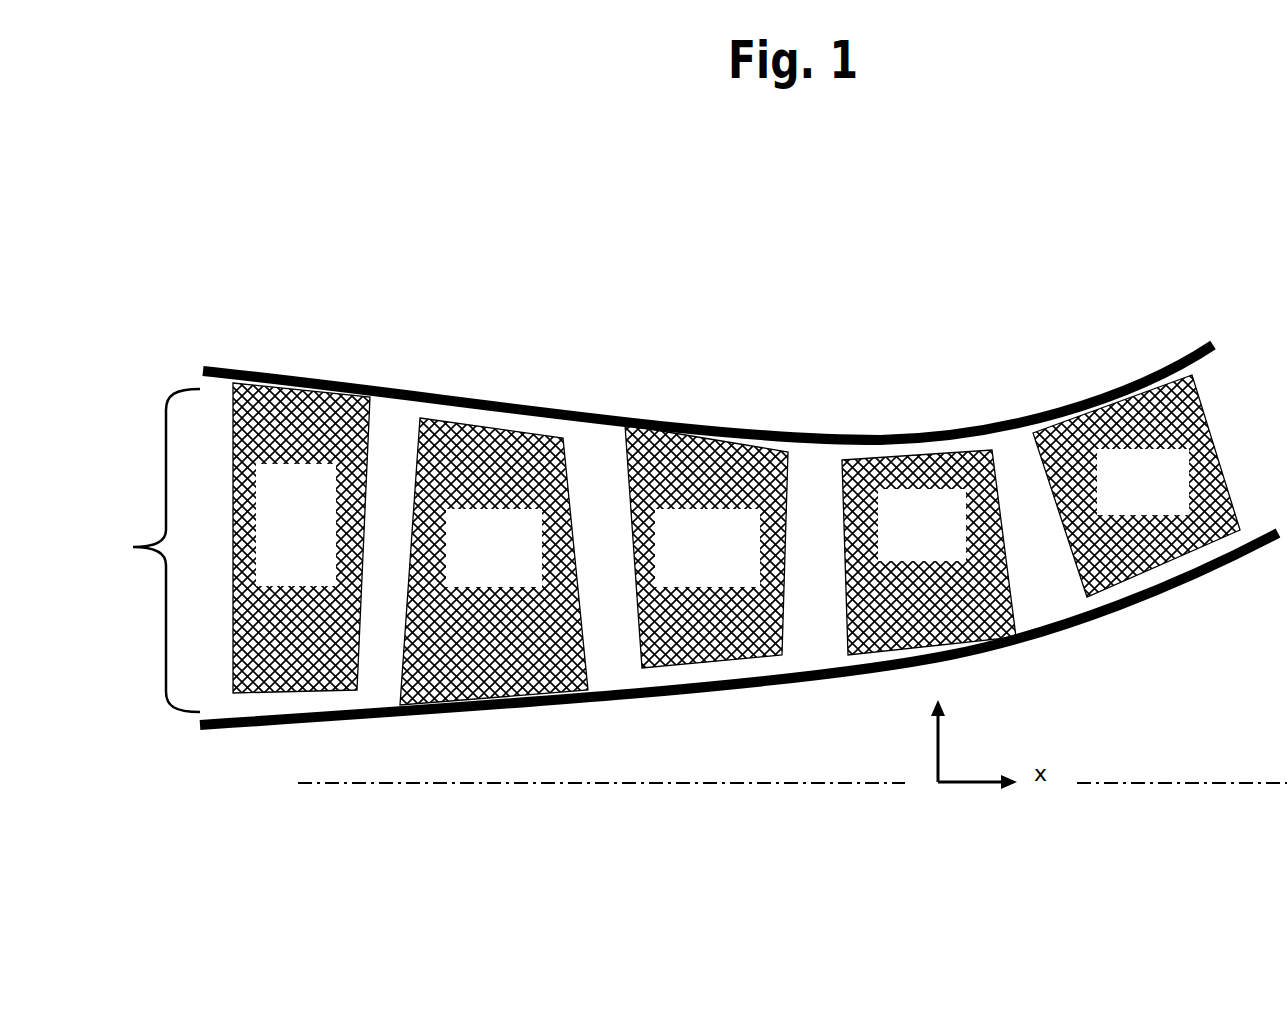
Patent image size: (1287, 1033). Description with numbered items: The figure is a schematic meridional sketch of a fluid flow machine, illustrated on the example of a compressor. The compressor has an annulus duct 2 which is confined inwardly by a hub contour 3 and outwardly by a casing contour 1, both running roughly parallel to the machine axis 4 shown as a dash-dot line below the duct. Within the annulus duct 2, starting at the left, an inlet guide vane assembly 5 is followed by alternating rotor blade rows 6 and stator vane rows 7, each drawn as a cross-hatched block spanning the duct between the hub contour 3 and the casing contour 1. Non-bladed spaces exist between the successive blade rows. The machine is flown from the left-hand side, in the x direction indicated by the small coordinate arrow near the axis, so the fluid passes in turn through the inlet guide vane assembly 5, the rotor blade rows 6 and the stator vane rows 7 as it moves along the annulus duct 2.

The casing contour 1 is at (230, 368).
The annulus duct 2 is at (127, 550).
The hub contour 3 is at (231, 730).
The machine axis 4 is at (573, 784).
The inlet guide vane assembly 5 is at (299, 377).
The rotor blade row 6 is at (477, 457).
The stator vane row 7 is at (705, 457).